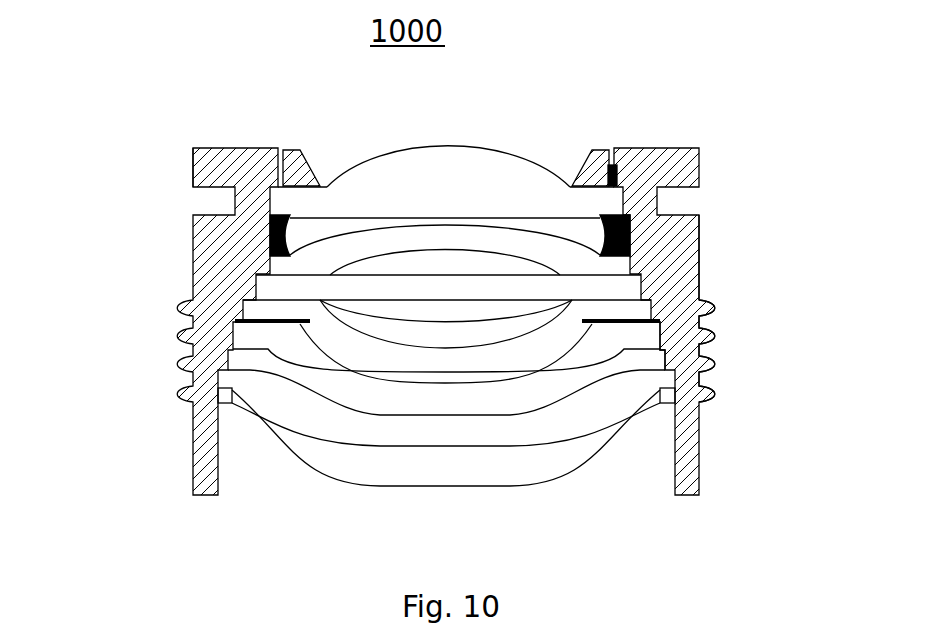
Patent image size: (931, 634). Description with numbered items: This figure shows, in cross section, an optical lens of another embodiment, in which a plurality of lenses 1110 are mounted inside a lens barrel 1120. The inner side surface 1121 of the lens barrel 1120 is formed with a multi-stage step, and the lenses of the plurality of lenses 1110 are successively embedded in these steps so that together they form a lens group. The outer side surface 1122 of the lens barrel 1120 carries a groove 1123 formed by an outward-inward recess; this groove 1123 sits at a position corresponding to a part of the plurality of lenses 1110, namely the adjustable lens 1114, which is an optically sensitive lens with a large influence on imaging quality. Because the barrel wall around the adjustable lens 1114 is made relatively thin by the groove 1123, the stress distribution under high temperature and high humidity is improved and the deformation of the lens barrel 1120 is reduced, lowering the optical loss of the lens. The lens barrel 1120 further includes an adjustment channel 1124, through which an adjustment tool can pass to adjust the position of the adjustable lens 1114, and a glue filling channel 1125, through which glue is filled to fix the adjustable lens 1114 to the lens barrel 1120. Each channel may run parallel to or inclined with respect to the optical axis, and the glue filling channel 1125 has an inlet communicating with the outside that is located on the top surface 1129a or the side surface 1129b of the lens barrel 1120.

The plurality of lenses 1110 is at (592, 480).
The adjustable lens 1114 is at (493, 182).
The lens barrel 1120 is at (710, 318).
The inner side surface 1121 is at (663, 347).
The outer side surface 1122 is at (700, 253).
The groove 1123 is at (683, 200).
The adjustment channel 1124 is at (283, 155).
The glue filling channel 1125 is at (613, 148).
The top surface 1129a is at (215, 150).
The side surface 1129b is at (192, 165).